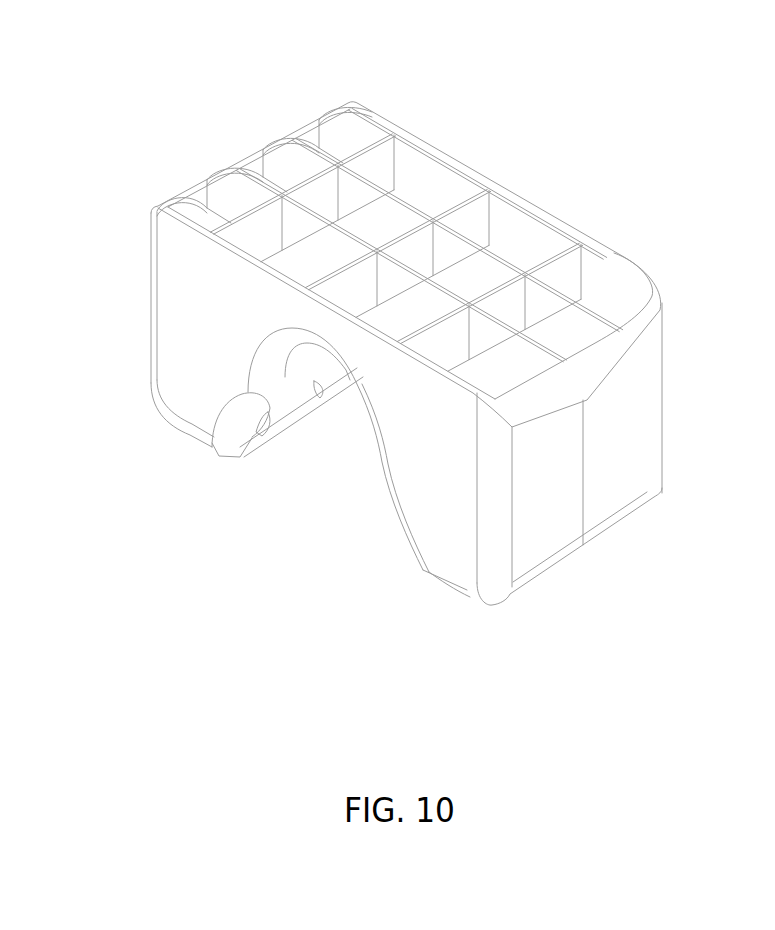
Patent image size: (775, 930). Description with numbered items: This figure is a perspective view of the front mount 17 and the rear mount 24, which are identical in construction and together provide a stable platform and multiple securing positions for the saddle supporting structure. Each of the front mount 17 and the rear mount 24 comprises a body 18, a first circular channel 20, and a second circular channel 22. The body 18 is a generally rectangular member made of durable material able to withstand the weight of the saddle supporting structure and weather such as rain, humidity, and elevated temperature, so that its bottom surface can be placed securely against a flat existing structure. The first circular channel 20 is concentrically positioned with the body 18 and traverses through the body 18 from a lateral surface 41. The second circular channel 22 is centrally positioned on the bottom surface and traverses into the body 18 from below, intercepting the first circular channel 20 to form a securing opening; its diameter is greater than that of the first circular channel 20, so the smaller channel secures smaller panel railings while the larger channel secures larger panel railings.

The front mount 17 is at (450, 311).
The rear mount 24 is at (406, 264).
The lateral surface 41 is at (216, 296).
The first circular channel 20 is at (300, 368).
The second circular channel 22 is at (257, 428).
The body 18 is at (633, 493).